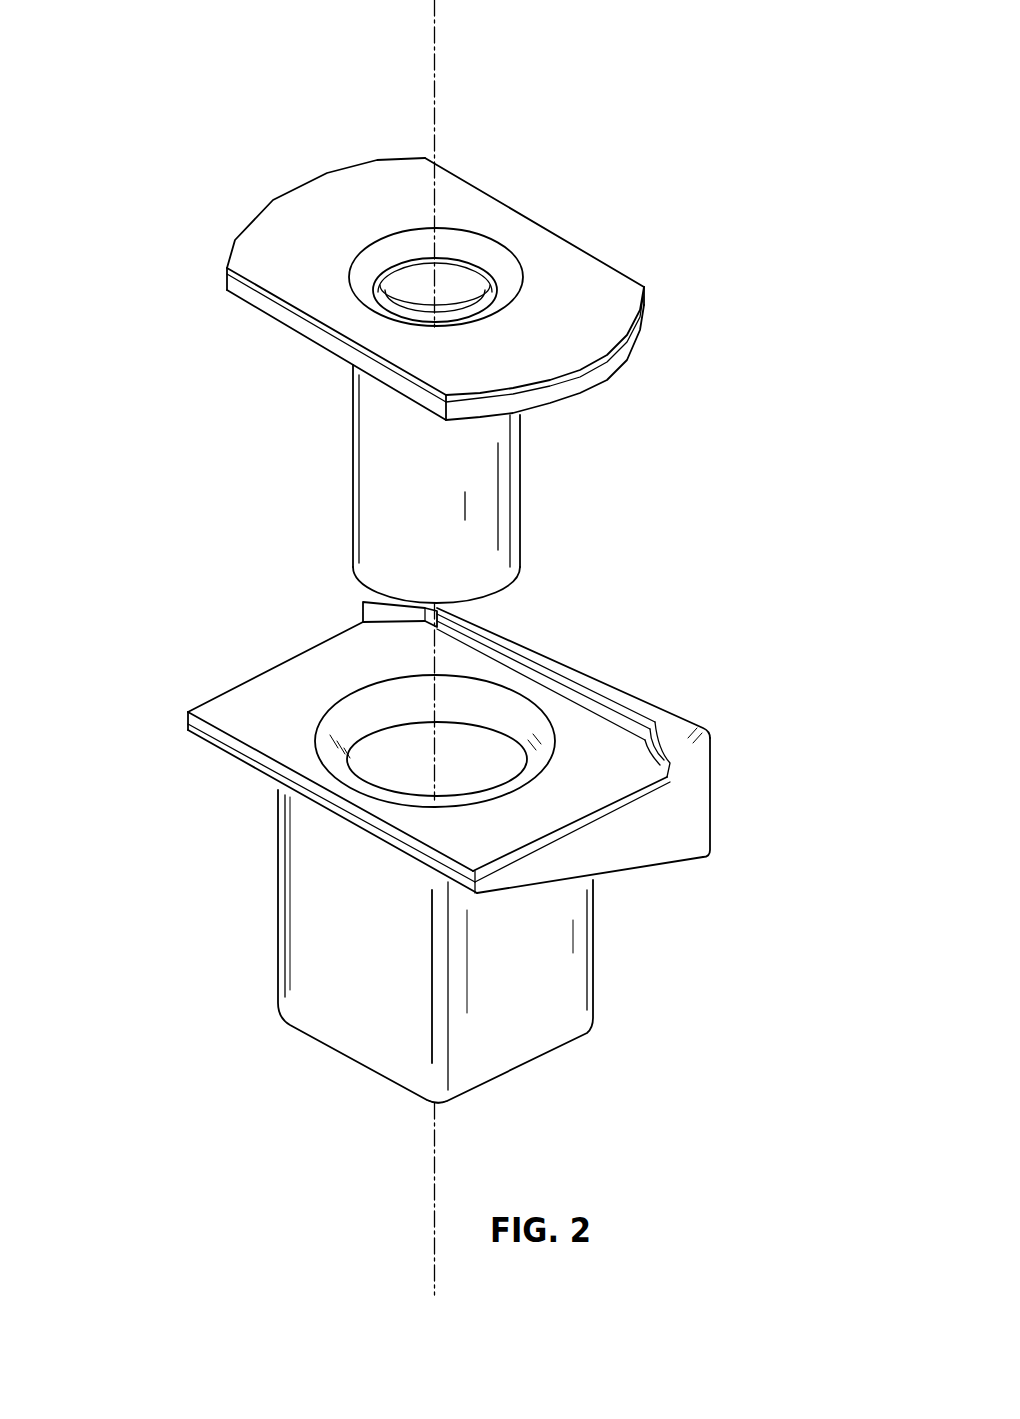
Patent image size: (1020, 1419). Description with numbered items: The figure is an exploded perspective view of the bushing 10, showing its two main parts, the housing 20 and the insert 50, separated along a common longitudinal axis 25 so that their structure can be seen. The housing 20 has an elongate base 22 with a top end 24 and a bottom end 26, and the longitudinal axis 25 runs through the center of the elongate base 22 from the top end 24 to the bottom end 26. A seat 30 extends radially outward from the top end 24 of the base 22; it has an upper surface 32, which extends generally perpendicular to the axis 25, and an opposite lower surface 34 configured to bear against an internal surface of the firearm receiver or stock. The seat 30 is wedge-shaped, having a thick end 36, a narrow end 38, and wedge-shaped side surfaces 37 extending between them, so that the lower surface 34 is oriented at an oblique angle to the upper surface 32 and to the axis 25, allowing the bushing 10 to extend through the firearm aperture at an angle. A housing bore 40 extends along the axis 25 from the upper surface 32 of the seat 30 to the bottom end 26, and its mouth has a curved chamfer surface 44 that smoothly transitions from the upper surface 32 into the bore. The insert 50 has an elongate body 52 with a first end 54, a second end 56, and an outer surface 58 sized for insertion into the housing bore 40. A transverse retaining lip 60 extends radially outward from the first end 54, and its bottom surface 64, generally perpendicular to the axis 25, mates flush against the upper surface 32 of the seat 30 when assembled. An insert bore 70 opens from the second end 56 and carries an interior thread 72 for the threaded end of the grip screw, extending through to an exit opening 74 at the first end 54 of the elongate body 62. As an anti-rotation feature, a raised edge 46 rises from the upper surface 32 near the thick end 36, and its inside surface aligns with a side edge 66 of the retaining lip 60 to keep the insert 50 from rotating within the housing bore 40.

The bushing 10 is at (718, 87).
The housing 20 is at (160, 856).
The elongate base 22 is at (327, 953).
The top end 24 is at (625, 613).
The longitudinal axis 25 is at (436, 78).
The bottom end 26 is at (507, 1118).
The seat 30 is at (243, 707).
The upper surface 32 is at (283, 693).
The lower surface 34 is at (628, 896).
The thick end 36 is at (728, 752).
The wedge-shaped side surfaces 37 is at (652, 836).
The narrow end 38 is at (370, 827).
The housing bore 40 is at (380, 760).
The curved chamfer surface 44 is at (525, 718).
The raised edge 46 is at (683, 730).
The insert 50 is at (130, 190).
The elongate body 52 is at (380, 493).
The first end 54 is at (615, 195).
The second end 56 is at (542, 548).
The outer surface 58 is at (377, 437).
The transverse retaining lip 60 is at (247, 268).
The elongate body 62 is at (292, 232).
The bottom surface 64 is at (228, 313).
The side edge 66 is at (462, 177).
The insert bore 70 is at (388, 215).
The interior thread 72 is at (450, 275).
The exit opening 74 is at (510, 273).